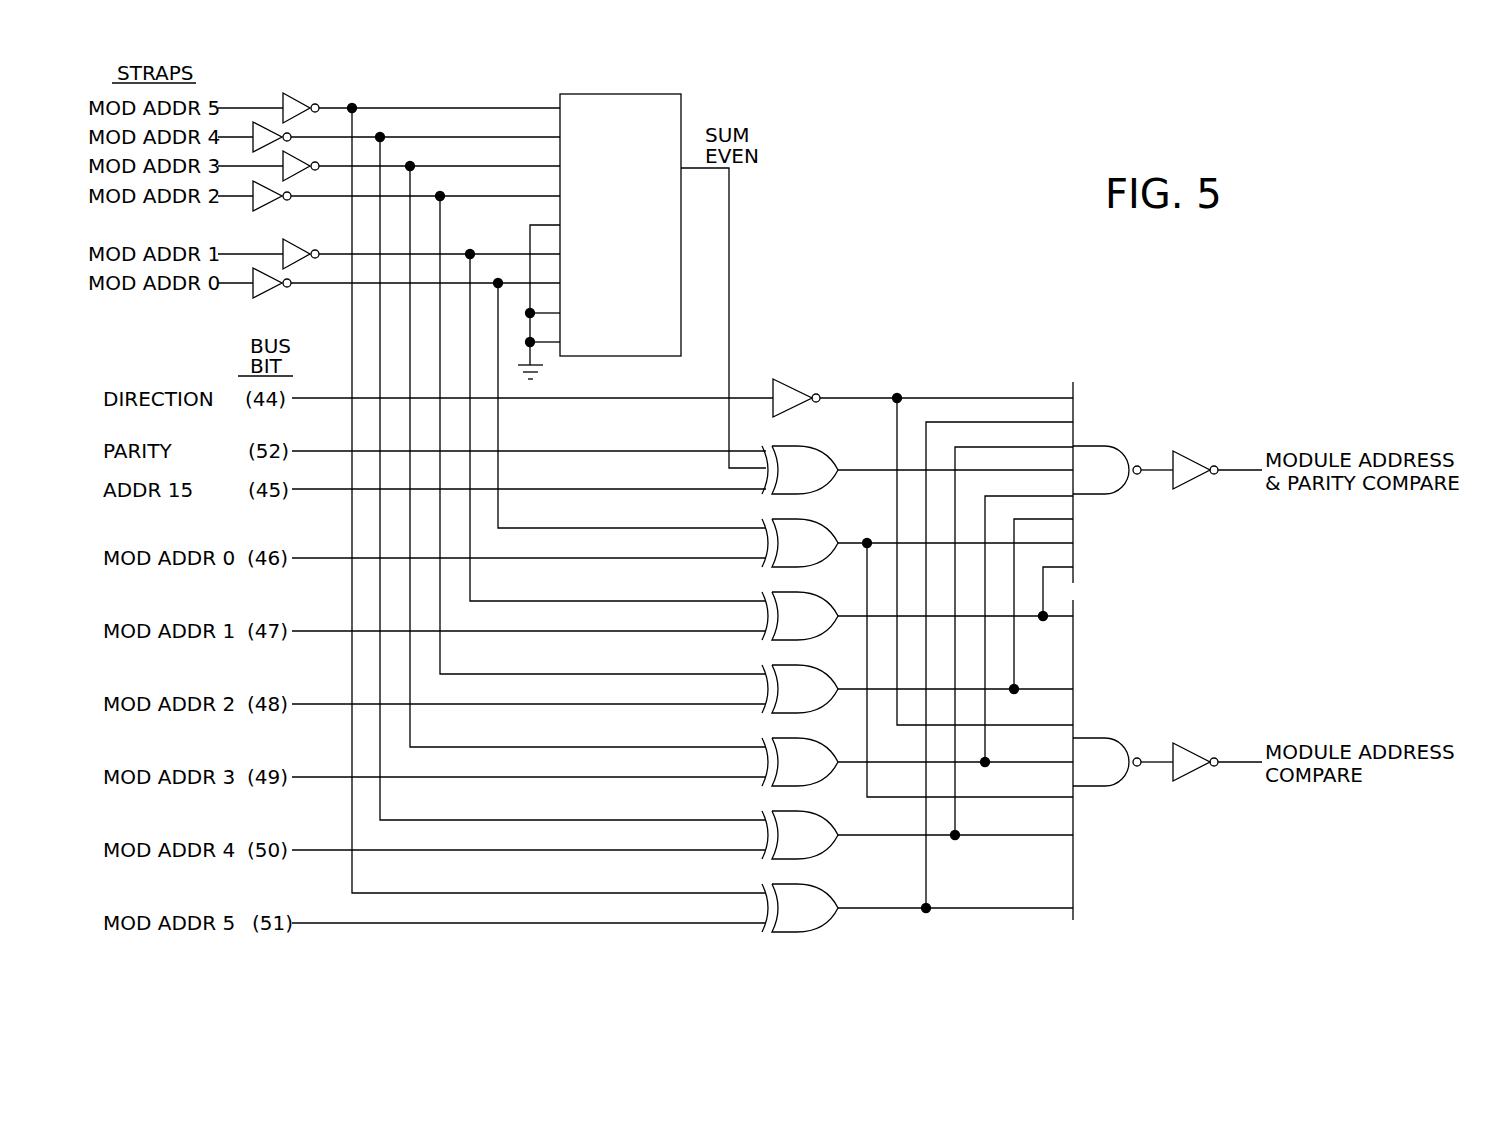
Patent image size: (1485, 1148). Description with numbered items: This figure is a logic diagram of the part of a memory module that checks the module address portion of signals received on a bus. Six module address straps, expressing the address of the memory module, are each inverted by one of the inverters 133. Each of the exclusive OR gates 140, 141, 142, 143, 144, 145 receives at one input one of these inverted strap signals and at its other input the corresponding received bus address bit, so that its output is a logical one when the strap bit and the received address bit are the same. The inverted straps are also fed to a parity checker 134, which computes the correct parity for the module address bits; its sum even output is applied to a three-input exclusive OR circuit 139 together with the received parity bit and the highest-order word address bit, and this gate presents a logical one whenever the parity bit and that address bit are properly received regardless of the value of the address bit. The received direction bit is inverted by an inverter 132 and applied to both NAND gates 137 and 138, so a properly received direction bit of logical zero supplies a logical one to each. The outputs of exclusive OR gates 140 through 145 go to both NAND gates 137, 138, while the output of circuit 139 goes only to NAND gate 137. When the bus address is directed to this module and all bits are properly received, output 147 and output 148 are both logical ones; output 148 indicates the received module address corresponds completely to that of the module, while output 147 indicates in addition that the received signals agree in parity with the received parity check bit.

The inverter 132 is at (788, 380).
The inverters 133 is at (283, 100).
The parity checker 134 is at (681, 122).
The NAND gate 137 is at (1098, 446).
The NAND gate 138 is at (1096, 738).
The exclusive OR circuit 139 is at (810, 449).
The exclusive OR gate 140 is at (810, 522).
The exclusive OR gate 141 is at (810, 595).
The exclusive OR gate 142 is at (810, 668).
The exclusive OR gate 143 is at (810, 741).
The exclusive OR gate 144 is at (810, 814).
The exclusive OR gate 145 is at (810, 887).
The output 147 is at (1240, 470).
The output 148 is at (1240, 762).